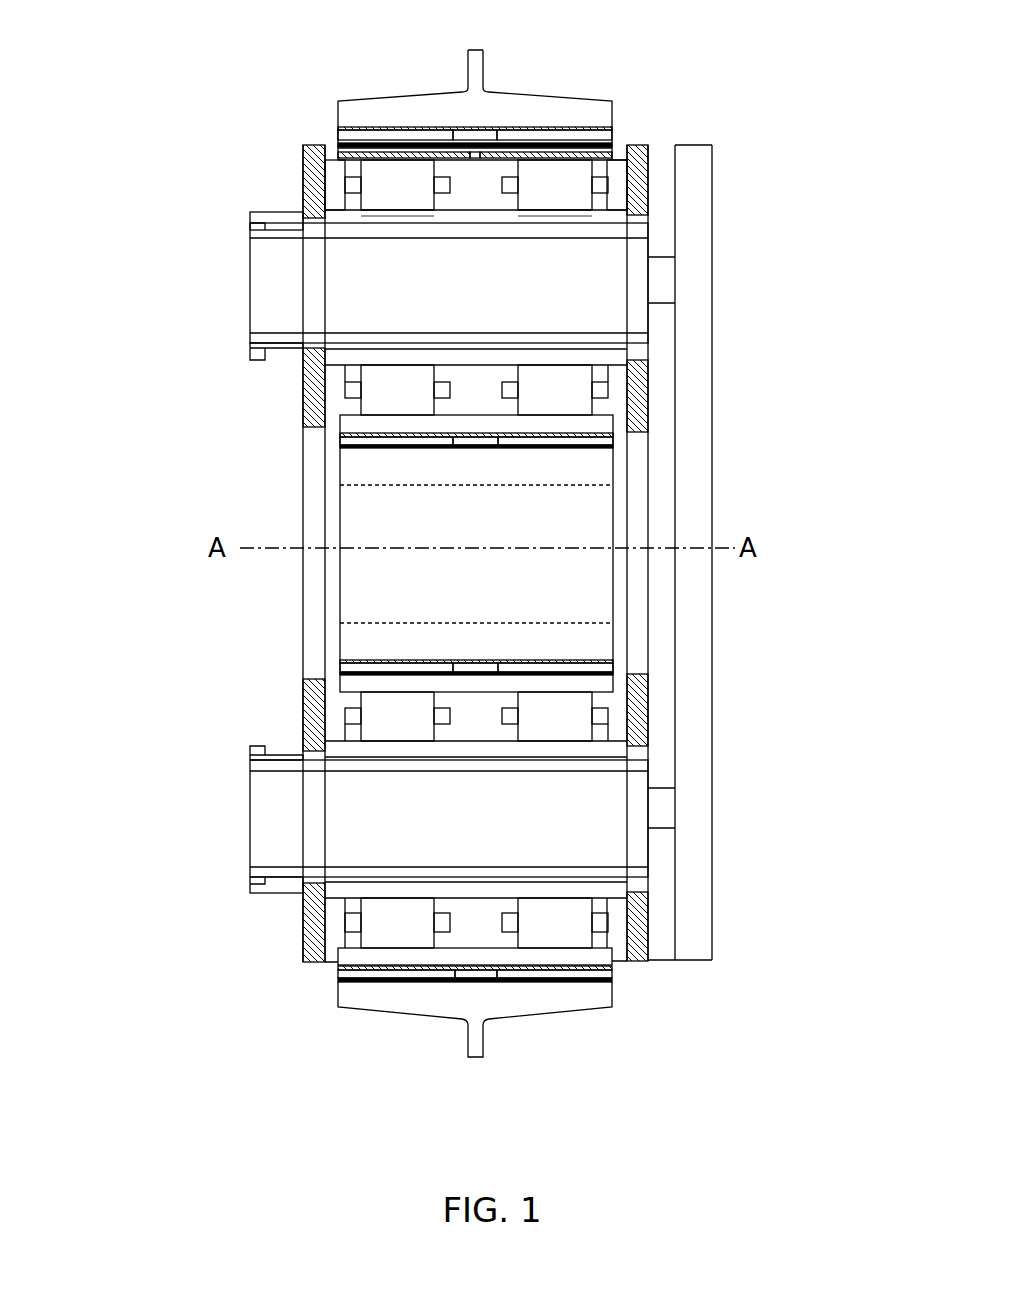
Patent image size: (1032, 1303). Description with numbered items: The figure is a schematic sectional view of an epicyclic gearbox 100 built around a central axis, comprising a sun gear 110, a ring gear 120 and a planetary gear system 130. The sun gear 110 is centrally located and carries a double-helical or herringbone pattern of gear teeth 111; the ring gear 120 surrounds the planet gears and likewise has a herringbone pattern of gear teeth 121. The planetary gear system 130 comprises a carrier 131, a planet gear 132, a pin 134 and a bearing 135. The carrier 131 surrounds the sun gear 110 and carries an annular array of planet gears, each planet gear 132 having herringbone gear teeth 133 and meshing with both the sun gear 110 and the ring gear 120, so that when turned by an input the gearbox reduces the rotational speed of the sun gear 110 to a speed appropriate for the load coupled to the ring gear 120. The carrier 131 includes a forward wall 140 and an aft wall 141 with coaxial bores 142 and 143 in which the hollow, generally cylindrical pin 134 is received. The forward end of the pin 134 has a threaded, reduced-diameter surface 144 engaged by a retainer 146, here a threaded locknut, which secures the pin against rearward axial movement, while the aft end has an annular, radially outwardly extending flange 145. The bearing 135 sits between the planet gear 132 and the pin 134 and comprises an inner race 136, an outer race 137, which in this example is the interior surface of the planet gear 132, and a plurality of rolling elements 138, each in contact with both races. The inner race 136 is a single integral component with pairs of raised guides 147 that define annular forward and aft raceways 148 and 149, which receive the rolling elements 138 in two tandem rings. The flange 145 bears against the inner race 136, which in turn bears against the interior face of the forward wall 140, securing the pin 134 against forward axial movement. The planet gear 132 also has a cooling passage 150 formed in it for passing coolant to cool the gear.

The epicyclic gearbox 100 is at (548, 60).
The sun gear 110 is at (597, 467).
The gear teeth 111 is at (603, 441).
The ring gear 120 is at (533, 1007).
The gear teeth 121 is at (607, 973).
The planetary gear system 130 is at (176, 186).
The carrier 131 is at (637, 415).
The planet gear 132 is at (303, 430).
The gear teeth 133 is at (350, 442).
The pin 134 is at (273, 340).
The bearing 135 is at (316, 124).
The inner race 136 is at (603, 212).
The outer race 137 is at (603, 160).
The rolling elements 138 is at (407, 172).
The forward wall 140 is at (317, 940).
The aft wall 141 is at (638, 942).
The bore 142 is at (304, 205).
The bore 143 is at (636, 187).
The reduced-diameter surface 144 is at (280, 226).
The flange 145 is at (640, 350).
The retainer 146 is at (278, 357).
The raised guides 147 is at (600, 187).
The forward raceway 148 is at (400, 215).
The aft raceway 149 is at (555, 215).
The cooling passage 150 is at (512, 90).